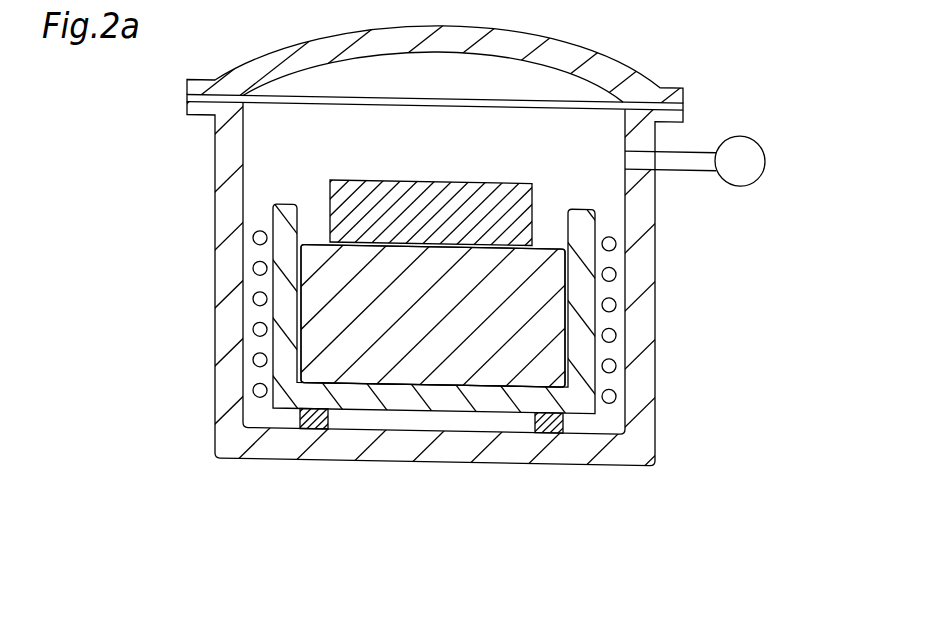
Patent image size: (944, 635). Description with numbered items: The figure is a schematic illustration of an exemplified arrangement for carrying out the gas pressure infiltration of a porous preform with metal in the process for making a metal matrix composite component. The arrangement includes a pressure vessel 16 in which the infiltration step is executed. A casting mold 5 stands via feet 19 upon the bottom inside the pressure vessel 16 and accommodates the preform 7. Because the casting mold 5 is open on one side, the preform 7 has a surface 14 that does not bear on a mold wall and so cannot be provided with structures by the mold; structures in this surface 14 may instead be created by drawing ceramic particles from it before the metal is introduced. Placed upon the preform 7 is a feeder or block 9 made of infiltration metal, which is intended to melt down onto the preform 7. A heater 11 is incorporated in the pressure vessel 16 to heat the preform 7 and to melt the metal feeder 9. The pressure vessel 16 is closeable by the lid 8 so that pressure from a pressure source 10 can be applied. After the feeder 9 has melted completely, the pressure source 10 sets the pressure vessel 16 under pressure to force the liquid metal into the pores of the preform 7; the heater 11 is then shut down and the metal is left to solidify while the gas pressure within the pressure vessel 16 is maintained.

The casting mold 5 is at (298, 395).
The preform 7 is at (318, 300).
The lid 8 is at (643, 84).
The feeder or block 9 is at (338, 210).
The pressure source 10 is at (740, 144).
The heater 11 is at (254, 363).
The surface 14 is at (544, 245).
The pressure vessel 16 is at (228, 332).
The feet 19 is at (313, 427).